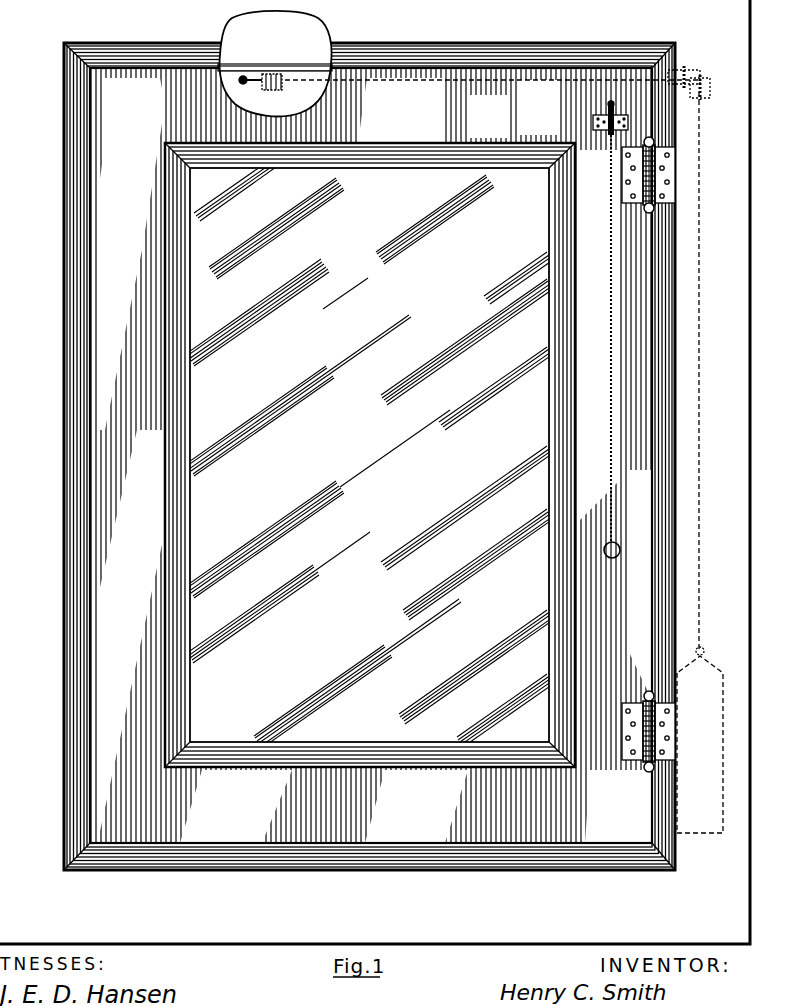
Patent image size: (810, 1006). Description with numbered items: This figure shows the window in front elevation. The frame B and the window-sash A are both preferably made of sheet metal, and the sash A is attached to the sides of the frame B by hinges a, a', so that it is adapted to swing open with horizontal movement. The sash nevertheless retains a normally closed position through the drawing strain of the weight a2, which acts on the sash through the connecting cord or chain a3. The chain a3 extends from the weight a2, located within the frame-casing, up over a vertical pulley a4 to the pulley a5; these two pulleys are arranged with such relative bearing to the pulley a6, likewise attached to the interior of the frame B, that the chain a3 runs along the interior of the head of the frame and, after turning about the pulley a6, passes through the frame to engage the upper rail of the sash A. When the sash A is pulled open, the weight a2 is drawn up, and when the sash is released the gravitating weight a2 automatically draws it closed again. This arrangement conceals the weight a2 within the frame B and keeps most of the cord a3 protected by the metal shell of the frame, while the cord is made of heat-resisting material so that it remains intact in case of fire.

The frame B is at (346, 456).
The window-sash A is at (370, 434).
The hinge a is at (675, 175).
The hinge a' is at (643, 743).
The weight a2 is at (700, 740).
The connecting cord or chain a3 is at (608, 322).
The vertical pulley a4 is at (710, 95).
The pulley a5 is at (614, 118).
The pulley a6 is at (283, 92).